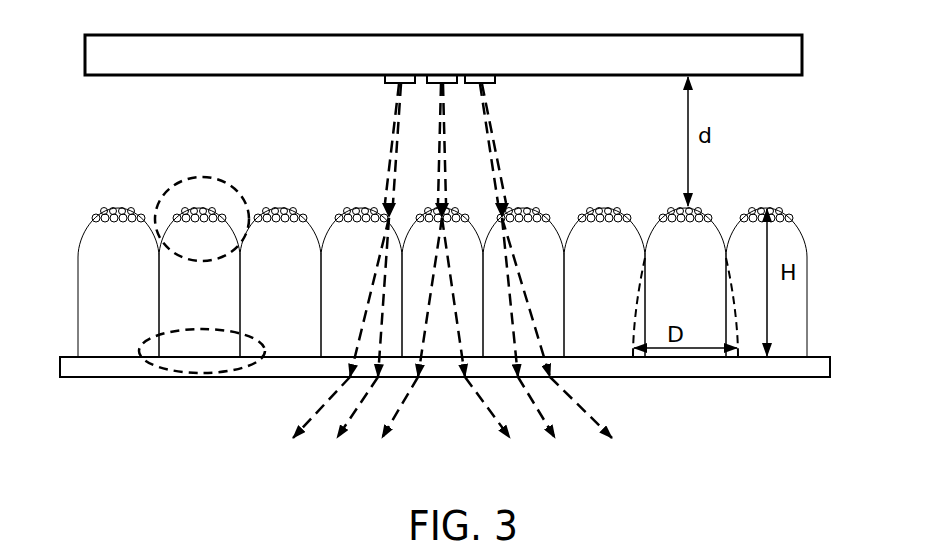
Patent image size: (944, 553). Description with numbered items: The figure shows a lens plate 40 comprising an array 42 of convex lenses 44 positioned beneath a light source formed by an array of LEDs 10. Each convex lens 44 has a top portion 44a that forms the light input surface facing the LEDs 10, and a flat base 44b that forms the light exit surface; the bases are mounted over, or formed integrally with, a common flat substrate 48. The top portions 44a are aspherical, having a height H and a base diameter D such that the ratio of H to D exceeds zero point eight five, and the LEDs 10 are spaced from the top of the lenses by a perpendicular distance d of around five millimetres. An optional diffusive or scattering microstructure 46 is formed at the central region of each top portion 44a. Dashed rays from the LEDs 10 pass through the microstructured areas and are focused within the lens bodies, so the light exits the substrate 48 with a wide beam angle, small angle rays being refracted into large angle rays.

The array of LEDs 10 is at (497, 76).
The lens plate 40 is at (778, 130).
The array of convex lenses 42 is at (75, 228).
The convex lens 44 is at (637, 229).
The top portion 44a is at (181, 183).
The base 44b is at (197, 373).
The microstructure 46 is at (602, 207).
The substrate 48 is at (60, 362).